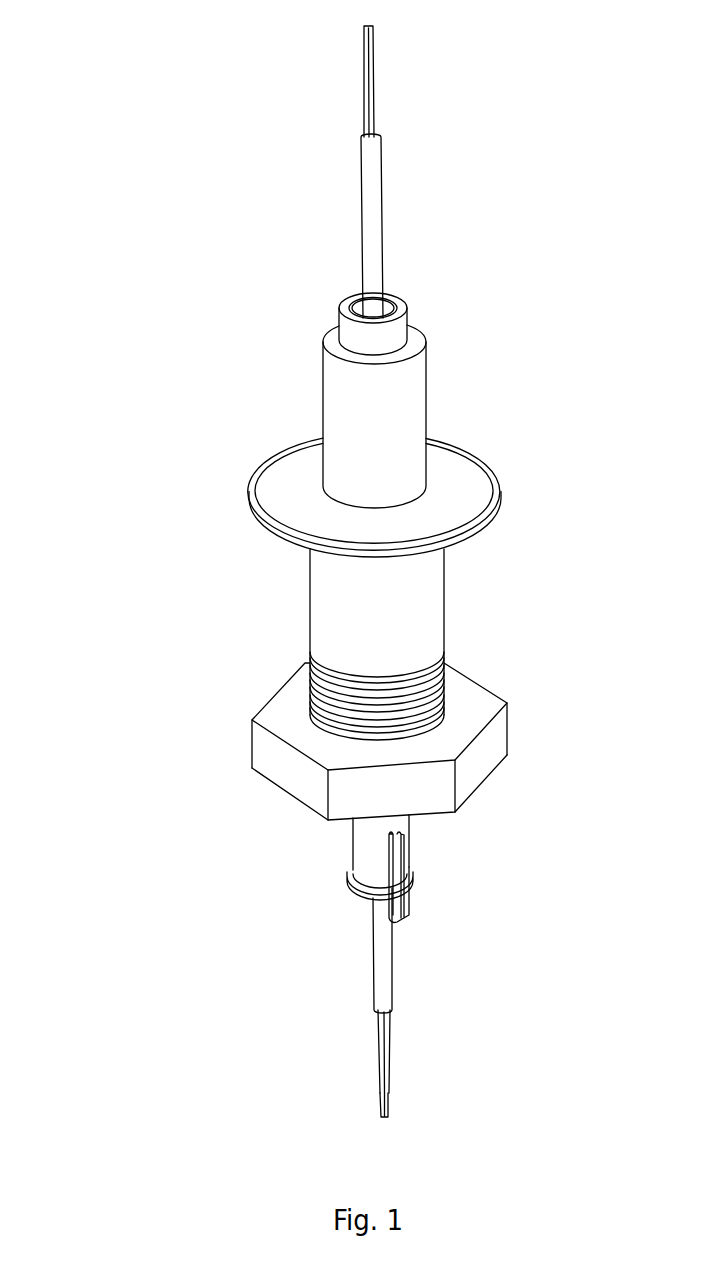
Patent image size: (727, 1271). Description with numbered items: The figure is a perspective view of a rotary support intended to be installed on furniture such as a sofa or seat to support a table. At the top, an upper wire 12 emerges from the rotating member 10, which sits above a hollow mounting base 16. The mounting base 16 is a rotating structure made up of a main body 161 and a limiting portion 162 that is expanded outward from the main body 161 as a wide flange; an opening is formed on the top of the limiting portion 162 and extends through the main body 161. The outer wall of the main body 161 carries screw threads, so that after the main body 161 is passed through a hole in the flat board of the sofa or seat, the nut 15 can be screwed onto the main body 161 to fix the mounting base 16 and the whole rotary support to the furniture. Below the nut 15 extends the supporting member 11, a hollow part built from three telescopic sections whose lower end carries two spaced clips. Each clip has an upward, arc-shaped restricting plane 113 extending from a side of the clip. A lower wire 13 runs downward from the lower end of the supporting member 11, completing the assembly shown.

The rotating member 10 is at (412, 380).
The supporting member 11 is at (358, 839).
The upper wire 12 is at (372, 204).
The lower wire 13 is at (388, 988).
The nut 15 is at (495, 737).
The mounting base 16 is at (360, 589).
The main body 161 is at (435, 610).
The limiting portion 162 is at (265, 486).
The restricting plane 113 is at (350, 878).